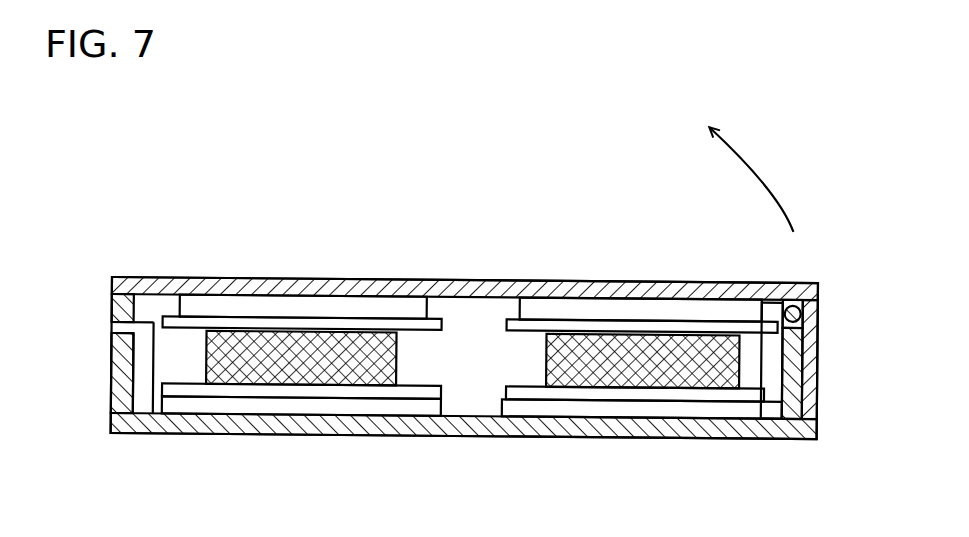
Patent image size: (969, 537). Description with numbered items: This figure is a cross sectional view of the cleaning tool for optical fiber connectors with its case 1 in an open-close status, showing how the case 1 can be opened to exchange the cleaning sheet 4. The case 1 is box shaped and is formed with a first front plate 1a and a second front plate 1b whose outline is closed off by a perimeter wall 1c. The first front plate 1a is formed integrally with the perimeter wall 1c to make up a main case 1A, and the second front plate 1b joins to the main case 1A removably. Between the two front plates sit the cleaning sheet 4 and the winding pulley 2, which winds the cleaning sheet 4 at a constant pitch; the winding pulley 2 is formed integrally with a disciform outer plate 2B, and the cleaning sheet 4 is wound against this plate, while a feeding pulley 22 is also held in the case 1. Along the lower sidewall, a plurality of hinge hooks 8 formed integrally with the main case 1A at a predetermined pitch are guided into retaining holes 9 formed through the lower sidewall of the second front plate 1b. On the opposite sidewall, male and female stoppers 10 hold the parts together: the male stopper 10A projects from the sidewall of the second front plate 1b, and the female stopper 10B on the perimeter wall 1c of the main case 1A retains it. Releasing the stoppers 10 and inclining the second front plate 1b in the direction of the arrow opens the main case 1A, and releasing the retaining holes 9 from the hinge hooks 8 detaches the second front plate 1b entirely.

The case 1 is at (469, 374).
The main case 1A is at (463, 472).
The first front plate 1a is at (305, 427).
The second front plate 1b is at (430, 298).
The perimeter wall 1c is at (110, 383).
The winding pulley 2 is at (153, 429).
The disciform outer plate 2B is at (265, 315).
The feeding pulley 22 is at (572, 300).
The cleaning sheet 4 is at (393, 352).
The hinge hooks 8 is at (112, 327).
The retaining holes 9 is at (112, 321).
The male and female stoppers 10 is at (697, 348).
The male stopper 10A is at (795, 310).
The female stopper 10B is at (778, 335).